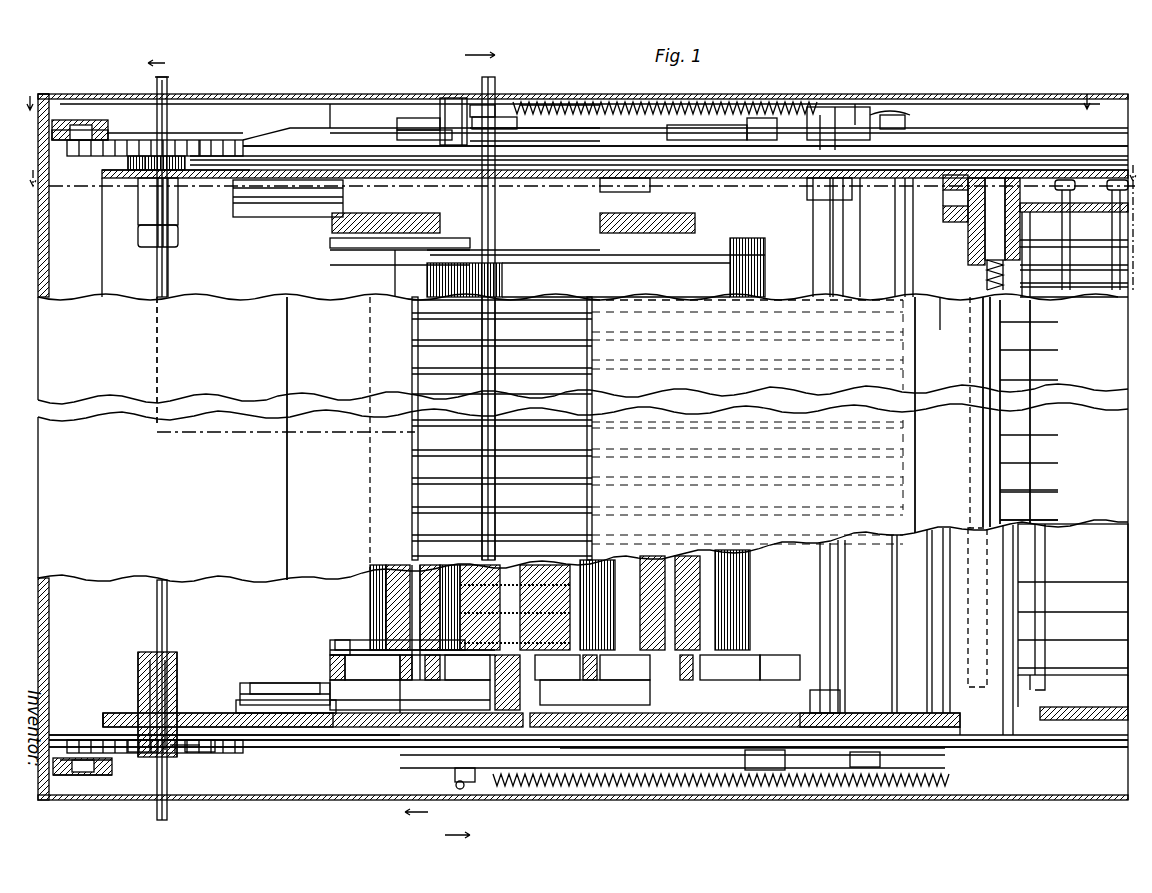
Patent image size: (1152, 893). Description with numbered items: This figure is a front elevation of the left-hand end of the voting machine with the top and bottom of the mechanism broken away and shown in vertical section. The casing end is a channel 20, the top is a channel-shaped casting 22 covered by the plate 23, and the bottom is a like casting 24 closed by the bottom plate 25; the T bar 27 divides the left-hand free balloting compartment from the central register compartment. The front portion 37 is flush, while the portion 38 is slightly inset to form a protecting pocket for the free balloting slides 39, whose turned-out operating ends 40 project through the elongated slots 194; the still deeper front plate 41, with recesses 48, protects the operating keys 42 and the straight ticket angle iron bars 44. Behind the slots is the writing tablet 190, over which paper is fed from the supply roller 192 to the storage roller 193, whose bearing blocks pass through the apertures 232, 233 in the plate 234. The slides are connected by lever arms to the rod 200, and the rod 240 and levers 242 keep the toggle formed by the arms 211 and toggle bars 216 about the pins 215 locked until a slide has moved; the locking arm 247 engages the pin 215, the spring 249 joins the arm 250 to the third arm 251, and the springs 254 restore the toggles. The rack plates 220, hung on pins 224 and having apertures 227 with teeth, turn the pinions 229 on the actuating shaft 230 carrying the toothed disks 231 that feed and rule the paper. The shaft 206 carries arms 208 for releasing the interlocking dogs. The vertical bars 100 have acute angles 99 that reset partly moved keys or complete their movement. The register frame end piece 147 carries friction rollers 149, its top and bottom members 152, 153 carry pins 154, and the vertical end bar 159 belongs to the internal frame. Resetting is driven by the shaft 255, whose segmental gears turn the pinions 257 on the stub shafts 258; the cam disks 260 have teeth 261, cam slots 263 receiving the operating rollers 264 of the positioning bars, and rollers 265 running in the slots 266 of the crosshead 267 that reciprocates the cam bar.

The channel 20 is at (38, 229).
The channel-shaped casting 22 is at (300, 110).
The plate 23 is at (863, 112).
The channel-shaped casting 24 is at (937, 731).
The bottom plate 25 is at (660, 790).
The T bar 27 is at (917, 482).
The front portion of casing 37 is at (166, 361).
The front wall portion 38 is at (307, 438).
The free balloting slides 39 is at (512, 428).
The operating ends 40 is at (593, 435).
The front plate 41 is at (1064, 361).
The operating keys 42 is at (1010, 488).
The straight ticket angle iron bars 44 is at (988, 416).
The recesses 48 is at (1040, 504).
The acute angle 99 is at (1013, 713).
The vertical bars 100 is at (986, 700).
The end piece 147 is at (941, 313).
The friction rollers 149 is at (885, 255).
The top member 152 is at (1050, 200).
The bottom member 153 is at (1073, 599).
The pins 154 is at (1073, 691).
The vertical end bar 159 is at (1002, 234).
The writing tablet 190 is at (590, 255).
The supply roller 192 is at (745, 240).
The storage roller 193 is at (335, 607).
The elongated slots 194 is at (400, 398).
The rod 200 is at (822, 632).
The shaft 206 is at (895, 640).
The arms 208 is at (905, 114).
The arms 211 is at (410, 138).
The pins 215 is at (445, 100).
The toggle bars 216 is at (330, 110).
The rack plates 220 is at (323, 232).
The pin 224 is at (806, 788).
The elongated apertures 227 is at (318, 683).
The spur gear pinions 229 is at (475, 690).
The actuating shaft 230 is at (575, 570).
The toothed disks 231 is at (505, 570).
The elongated rectangular aperture 232 is at (466, 637).
The elongated rectangular aperture 233 is at (557, 667).
The plate 234 is at (330, 640).
The rod 240 is at (840, 240).
The levers 242 is at (725, 125).
The second arm 247 is at (418, 114).
The helically coiled contractile spring 249 is at (572, 104).
The arm 250 is at (913, 98).
The third arm 251 is at (492, 118).
The helically coiled contractile springs 254 is at (490, 102).
The shaft 255 is at (157, 86).
The pinions 257 is at (170, 140).
The stub shafts 258 is at (150, 676).
The cam disks 260 is at (200, 755).
The teeth 261 is at (205, 145).
The cam slots 263 is at (72, 775).
The operating rollers 264 is at (215, 150).
The rollers 265 is at (80, 120).
The slots 266 is at (68, 120).
The crosshead 267 is at (100, 140).